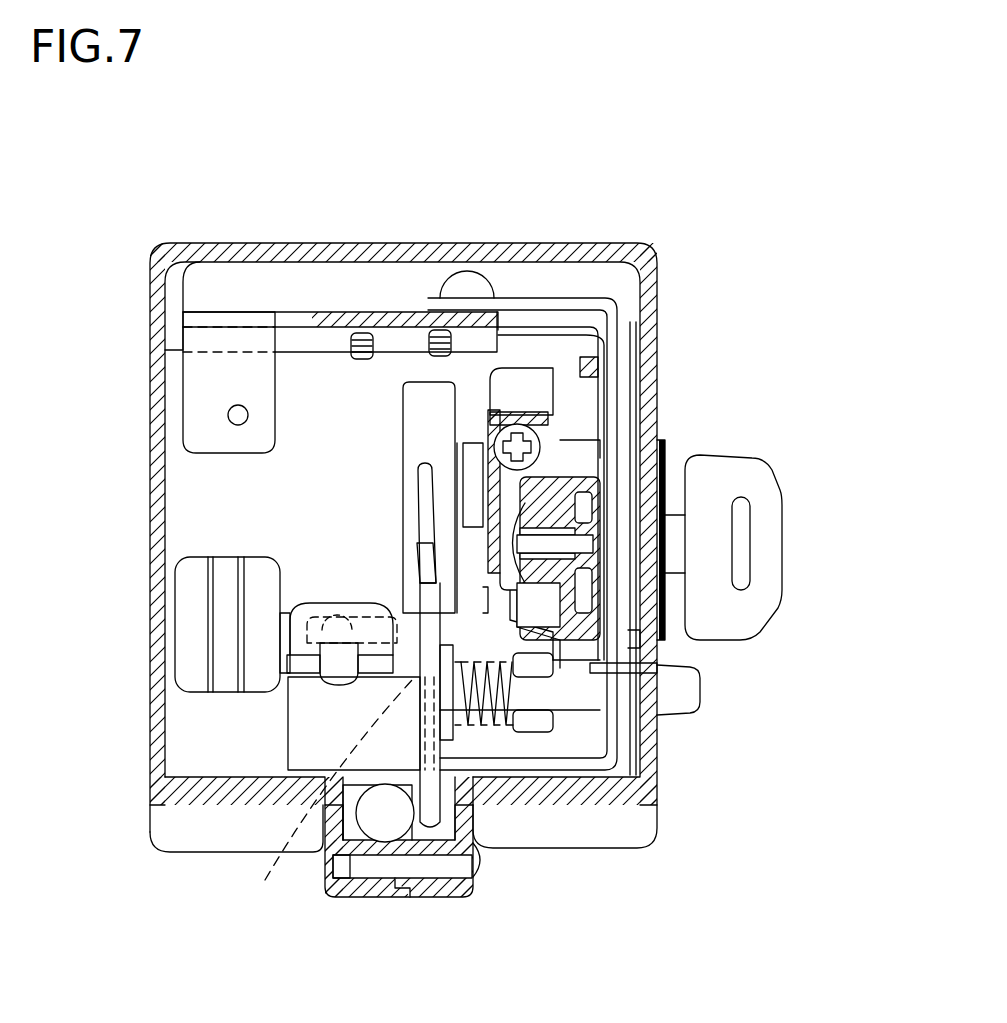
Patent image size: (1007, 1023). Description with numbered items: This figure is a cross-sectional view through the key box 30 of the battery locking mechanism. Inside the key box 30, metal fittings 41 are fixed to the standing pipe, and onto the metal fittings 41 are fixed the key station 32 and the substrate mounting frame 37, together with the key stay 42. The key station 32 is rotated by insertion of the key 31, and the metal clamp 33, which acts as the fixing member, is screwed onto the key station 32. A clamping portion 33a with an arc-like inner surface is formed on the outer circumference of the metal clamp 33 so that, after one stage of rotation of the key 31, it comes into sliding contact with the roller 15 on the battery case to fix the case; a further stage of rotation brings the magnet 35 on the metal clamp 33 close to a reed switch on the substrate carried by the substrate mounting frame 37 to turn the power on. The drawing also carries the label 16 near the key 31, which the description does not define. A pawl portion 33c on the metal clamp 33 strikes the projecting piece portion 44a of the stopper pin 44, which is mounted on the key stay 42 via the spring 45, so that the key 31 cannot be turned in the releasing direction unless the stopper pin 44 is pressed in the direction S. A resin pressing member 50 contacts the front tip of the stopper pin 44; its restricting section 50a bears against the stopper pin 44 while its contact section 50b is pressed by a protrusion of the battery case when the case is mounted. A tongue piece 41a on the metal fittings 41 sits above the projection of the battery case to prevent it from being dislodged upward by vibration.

The key box 30 is at (556, 211).
The metal fittings 41 is at (292, 312).
The tongue piece 41a is at (600, 458).
The substrate mounting frame 37 is at (410, 392).
The magnet 35 is at (478, 440).
The key stay 42 is at (617, 758).
The metal clamp 33 is at (560, 440).
The clamping portion 33a is at (530, 373).
The pawl portion 33c is at (700, 681).
The roller 15 is at (600, 490).
The plunger 16 is at (513, 547).
The key 31 is at (765, 572).
The key station 32 is at (637, 638).
The pressing direction S is at (724, 700).
The pressing member 50 is at (339, 590).
The restricting section 50a is at (265, 880).
The contact section 50b is at (190, 613).
The stopper pin 44 is at (588, 705).
The projecting piece portion 44a is at (533, 733).
The spring 45 is at (482, 722).